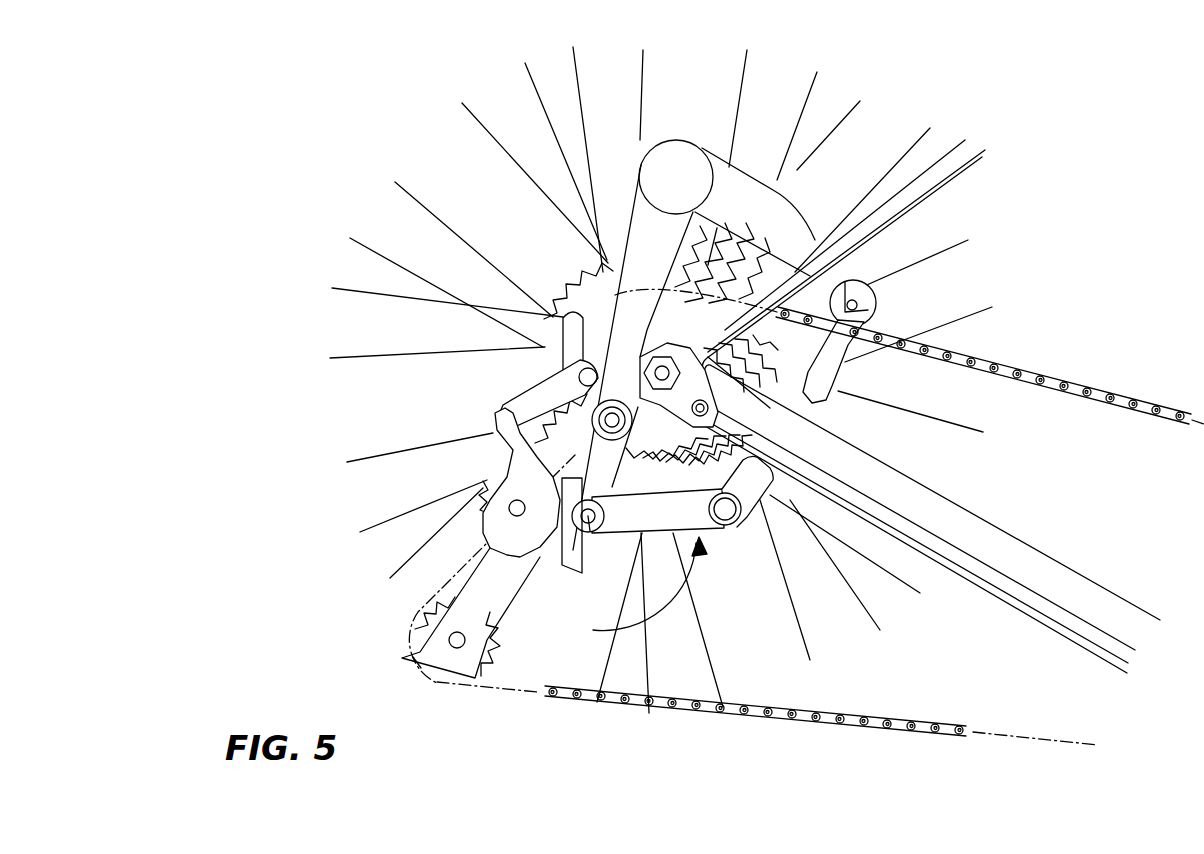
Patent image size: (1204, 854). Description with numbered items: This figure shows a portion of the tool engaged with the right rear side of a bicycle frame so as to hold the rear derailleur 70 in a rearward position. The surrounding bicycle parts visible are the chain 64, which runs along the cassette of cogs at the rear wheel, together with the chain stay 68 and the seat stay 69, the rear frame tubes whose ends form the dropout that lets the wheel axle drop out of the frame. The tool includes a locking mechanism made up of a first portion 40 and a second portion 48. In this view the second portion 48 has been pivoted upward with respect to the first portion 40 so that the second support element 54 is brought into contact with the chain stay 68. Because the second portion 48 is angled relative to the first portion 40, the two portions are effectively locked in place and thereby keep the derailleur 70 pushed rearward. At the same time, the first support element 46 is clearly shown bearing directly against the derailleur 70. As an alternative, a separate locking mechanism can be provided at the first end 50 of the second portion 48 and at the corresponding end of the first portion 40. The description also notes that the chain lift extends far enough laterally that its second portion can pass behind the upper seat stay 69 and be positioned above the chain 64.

The first portion 40 is at (595, 497).
The first support element 46 is at (560, 567).
The second portion 48 is at (657, 540).
The first end 50 is at (597, 532).
The second support element 54 is at (748, 505).
The chain 64 is at (1128, 410).
The chain stay 68 is at (1047, 582).
The seat stay 69 is at (897, 167).
The rear derailleur 70 is at (497, 537).